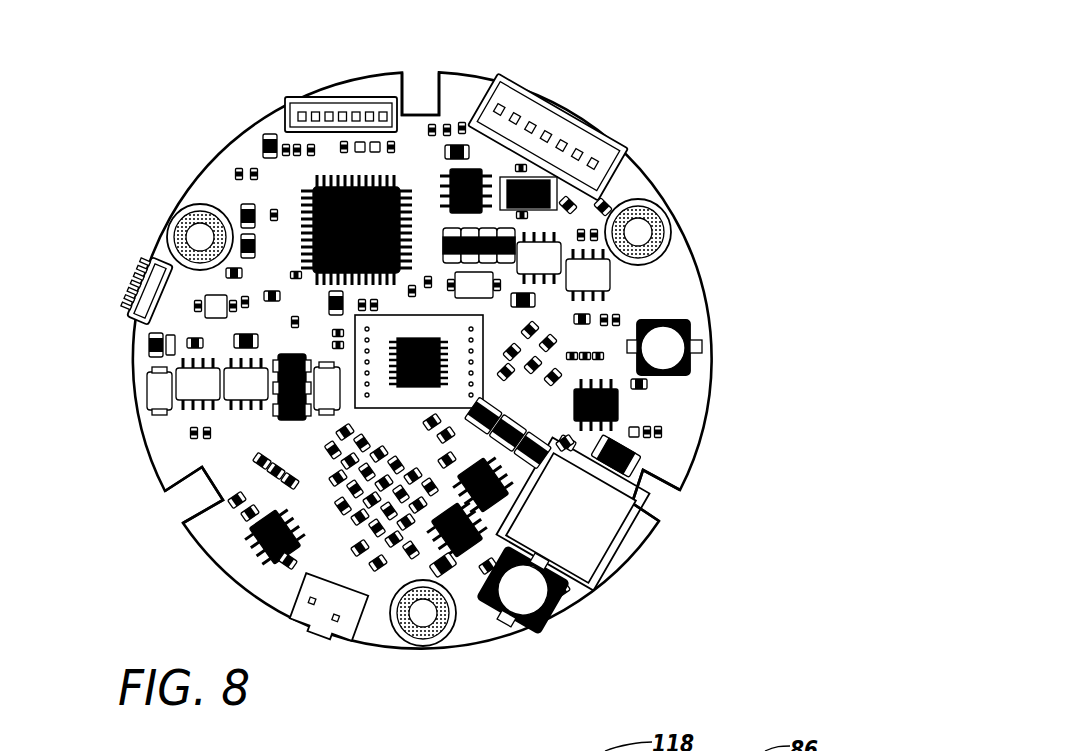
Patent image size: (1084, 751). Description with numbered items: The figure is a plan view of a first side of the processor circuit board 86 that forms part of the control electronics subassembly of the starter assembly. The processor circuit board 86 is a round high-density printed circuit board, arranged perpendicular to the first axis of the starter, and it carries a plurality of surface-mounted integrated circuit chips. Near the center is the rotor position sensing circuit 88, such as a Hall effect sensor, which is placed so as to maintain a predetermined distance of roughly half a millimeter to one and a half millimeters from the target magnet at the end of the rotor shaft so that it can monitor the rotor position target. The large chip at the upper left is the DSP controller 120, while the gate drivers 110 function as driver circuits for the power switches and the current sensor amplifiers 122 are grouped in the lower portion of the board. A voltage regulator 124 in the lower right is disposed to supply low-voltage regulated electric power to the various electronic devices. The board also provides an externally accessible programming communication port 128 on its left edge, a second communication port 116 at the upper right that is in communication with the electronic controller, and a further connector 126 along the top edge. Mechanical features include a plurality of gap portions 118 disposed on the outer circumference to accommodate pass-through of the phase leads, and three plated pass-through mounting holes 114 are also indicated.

The processor circuit board 86 is at (707, 393).
The rotor position sensing circuit 88 is at (440, 342).
The gate drivers 110 is at (245, 390).
The plated pass-through mounting holes 114 is at (185, 238).
The second communication port 116 is at (602, 138).
The gap portions 118 is at (414, 87).
The DSP controller 120 is at (303, 197).
The current sensor amplifiers 122 is at (323, 462).
The voltage regulator 124 is at (598, 531).
The connector 126 is at (287, 112).
The externally accessible programming communication port 128 is at (132, 290).